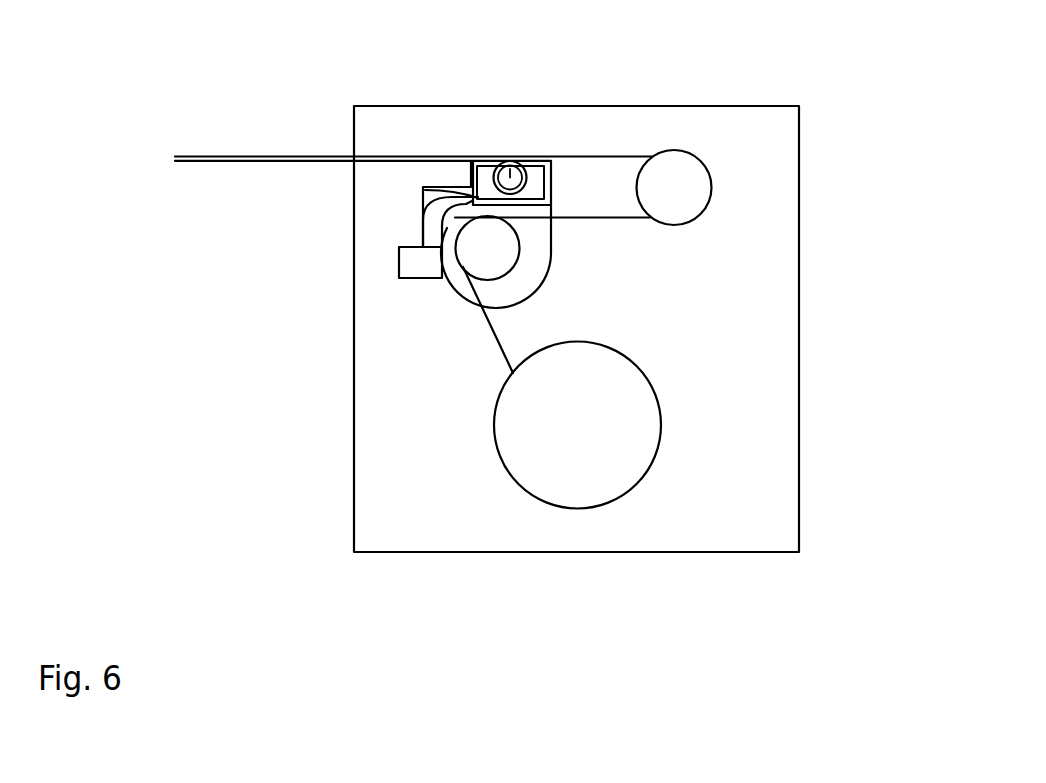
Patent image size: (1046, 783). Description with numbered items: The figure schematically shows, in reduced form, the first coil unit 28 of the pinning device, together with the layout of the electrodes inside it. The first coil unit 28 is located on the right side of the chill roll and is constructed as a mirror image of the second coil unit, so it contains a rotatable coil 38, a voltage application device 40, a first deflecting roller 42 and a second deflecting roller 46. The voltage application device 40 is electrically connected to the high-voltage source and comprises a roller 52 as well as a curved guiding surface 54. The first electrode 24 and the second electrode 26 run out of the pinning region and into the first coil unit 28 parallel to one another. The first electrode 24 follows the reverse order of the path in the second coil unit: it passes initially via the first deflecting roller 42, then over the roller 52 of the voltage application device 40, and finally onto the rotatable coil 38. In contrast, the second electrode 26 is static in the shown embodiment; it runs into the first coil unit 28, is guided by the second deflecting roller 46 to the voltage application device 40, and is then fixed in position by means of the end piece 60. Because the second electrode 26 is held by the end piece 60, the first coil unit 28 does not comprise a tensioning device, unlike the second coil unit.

The first electrode 24 is at (493, 342).
The second electrode 26 is at (425, 190).
The first coil unit 28 is at (827, 62).
The rotatable coil 38 is at (602, 467).
The voltage application device 40 is at (528, 278).
The first deflecting roller 42 is at (672, 175).
The second deflecting roller 46 is at (510, 165).
The roller 52 is at (503, 247).
The curved guiding surface 54 is at (435, 225).
The end piece 60 is at (412, 268).